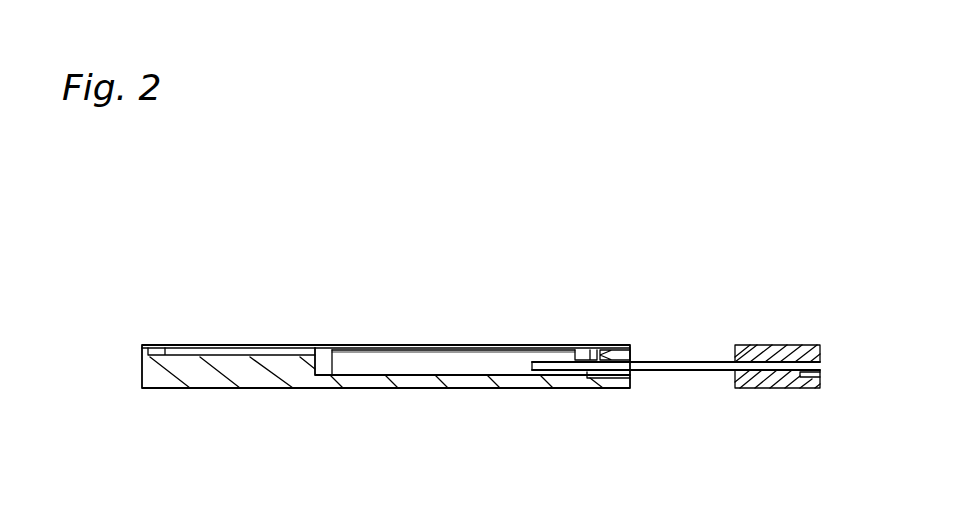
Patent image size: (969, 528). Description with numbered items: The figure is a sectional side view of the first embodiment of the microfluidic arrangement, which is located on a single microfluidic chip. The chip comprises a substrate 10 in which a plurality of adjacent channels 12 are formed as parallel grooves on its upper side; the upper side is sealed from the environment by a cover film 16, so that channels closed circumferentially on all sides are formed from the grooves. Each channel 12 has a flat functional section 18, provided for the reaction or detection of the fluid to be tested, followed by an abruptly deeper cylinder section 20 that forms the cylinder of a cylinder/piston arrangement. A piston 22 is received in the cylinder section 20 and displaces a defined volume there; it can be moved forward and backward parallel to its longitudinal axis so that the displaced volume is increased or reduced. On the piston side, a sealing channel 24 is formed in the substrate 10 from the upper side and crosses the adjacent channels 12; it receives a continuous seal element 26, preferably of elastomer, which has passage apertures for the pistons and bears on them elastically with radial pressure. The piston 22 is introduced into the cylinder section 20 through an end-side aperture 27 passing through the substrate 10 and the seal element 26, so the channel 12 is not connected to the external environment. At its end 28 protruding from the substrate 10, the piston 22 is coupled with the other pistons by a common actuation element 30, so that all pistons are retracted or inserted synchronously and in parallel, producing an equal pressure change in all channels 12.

The substrate 10 is at (212, 378).
The channel 12 is at (357, 346).
The cover film 16 is at (467, 347).
The functional section 18 is at (242, 347).
The cylinder section 20 is at (395, 368).
The piston 22 is at (568, 362).
The sealing channel 24 is at (606, 355).
The seal element 26 is at (597, 355).
The aperture 27 is at (632, 370).
The piston end 28 is at (786, 372).
The actuation element 30 is at (772, 347).